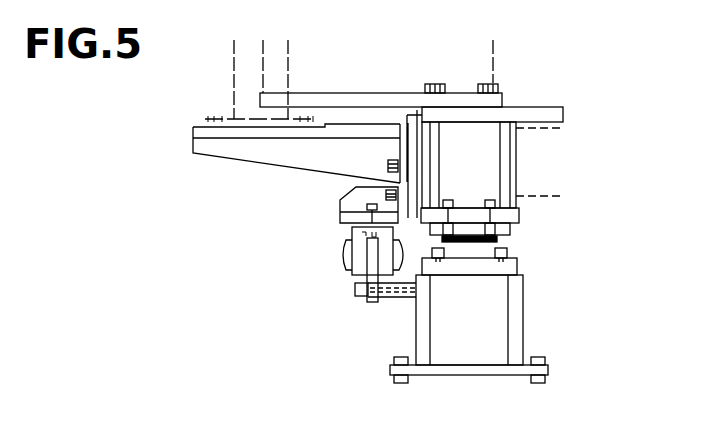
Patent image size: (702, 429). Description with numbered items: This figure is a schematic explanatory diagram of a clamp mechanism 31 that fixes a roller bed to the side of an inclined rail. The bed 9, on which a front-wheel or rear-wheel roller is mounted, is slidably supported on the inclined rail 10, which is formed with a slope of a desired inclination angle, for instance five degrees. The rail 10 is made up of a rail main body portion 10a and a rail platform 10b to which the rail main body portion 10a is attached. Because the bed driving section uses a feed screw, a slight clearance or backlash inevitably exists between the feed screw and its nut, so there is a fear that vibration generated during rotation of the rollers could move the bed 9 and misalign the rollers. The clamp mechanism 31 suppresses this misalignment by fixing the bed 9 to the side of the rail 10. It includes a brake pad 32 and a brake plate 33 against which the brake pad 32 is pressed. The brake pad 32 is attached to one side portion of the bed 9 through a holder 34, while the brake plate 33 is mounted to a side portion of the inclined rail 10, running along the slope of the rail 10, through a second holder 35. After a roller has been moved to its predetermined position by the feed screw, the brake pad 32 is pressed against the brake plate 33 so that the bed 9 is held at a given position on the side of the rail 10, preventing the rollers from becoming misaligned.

The bed 9 is at (254, 167).
The inclined rail 10 is at (511, 245).
The rail main body portion 10a is at (475, 245).
The rail platform 10b is at (470, 298).
The clamp mechanism 31 is at (322, 266).
The brake pad 32 is at (358, 246).
The brake plate 33 is at (352, 271).
The holder 34 is at (352, 208).
The holder 35 is at (393, 301).